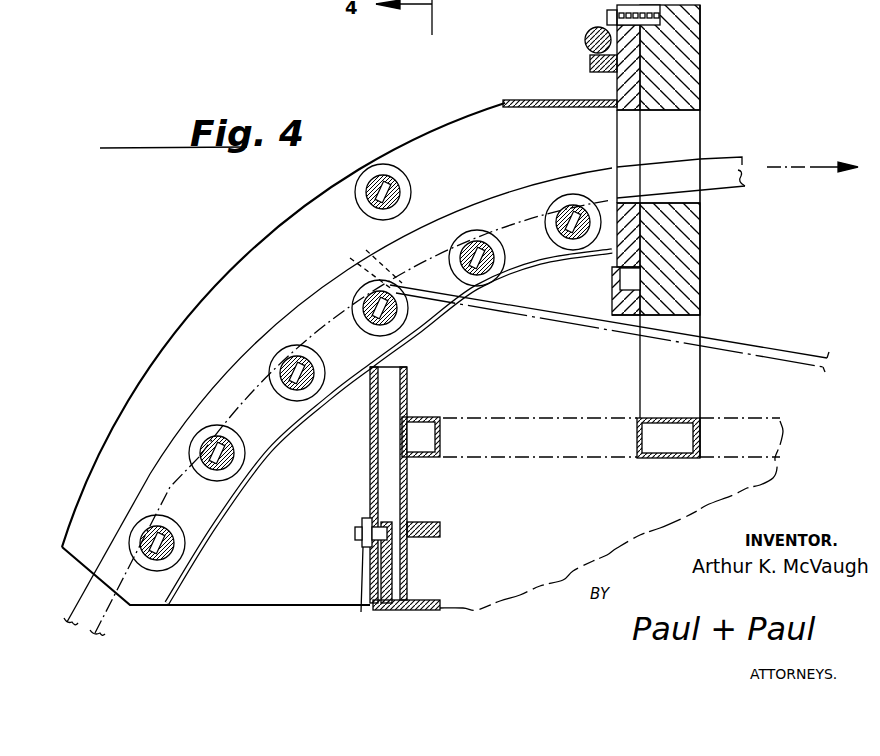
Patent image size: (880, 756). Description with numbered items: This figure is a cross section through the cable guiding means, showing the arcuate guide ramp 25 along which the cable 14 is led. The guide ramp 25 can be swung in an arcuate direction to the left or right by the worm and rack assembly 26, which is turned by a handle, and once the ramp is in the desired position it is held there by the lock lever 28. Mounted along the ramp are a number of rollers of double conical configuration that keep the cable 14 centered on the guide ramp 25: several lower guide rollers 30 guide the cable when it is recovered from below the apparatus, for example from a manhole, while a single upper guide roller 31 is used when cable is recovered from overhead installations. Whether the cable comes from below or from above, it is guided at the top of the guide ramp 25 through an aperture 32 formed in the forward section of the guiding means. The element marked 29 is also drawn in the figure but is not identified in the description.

The cable 14 is at (728, 190).
The guide ramp 25 is at (200, 300).
The worm and rack assembly 26 is at (586, 40).
The lock lever 28 is at (360, 587).
The bolt 29 is at (153, 540).
The lower guide rollers 30 is at (562, 208).
The upper guide roller 31 is at (385, 165).
The aperture 32 is at (685, 130).